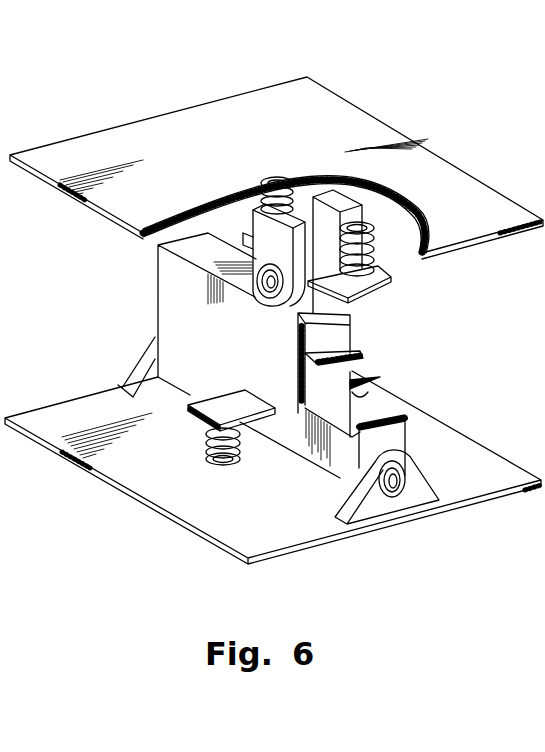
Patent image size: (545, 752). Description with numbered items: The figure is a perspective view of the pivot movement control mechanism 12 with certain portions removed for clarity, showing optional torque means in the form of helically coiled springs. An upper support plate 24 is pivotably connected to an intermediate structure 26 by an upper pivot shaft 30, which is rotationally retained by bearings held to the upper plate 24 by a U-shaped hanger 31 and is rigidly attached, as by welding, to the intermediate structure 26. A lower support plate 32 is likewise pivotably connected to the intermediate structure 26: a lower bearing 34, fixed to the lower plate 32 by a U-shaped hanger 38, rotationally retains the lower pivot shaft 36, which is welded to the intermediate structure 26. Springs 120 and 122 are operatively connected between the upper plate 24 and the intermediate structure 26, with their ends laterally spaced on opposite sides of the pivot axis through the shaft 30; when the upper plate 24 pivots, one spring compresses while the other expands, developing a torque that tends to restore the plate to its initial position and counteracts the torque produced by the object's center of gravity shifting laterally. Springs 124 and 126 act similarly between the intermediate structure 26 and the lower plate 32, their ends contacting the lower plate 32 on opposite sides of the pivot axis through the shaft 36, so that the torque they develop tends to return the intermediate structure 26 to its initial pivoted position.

The pivot movement control mechanism 12 is at (442, 318).
The upper support plate 24 is at (359, 118).
The intermediate structure 26 is at (162, 306).
The upper pivot shaft 30 is at (268, 285).
The U-shaped hanger 31 is at (258, 230).
The lower support plate 32 is at (204, 521).
The lower bearing 34 is at (411, 473).
The lower pivot shaft 36 is at (395, 484).
The U-shaped hanger 38 is at (380, 507).
The torque spring 120 is at (262, 175).
The torque spring 122 is at (374, 256).
The torque spring 124 is at (205, 443).
The torque spring 126 is at (362, 395).